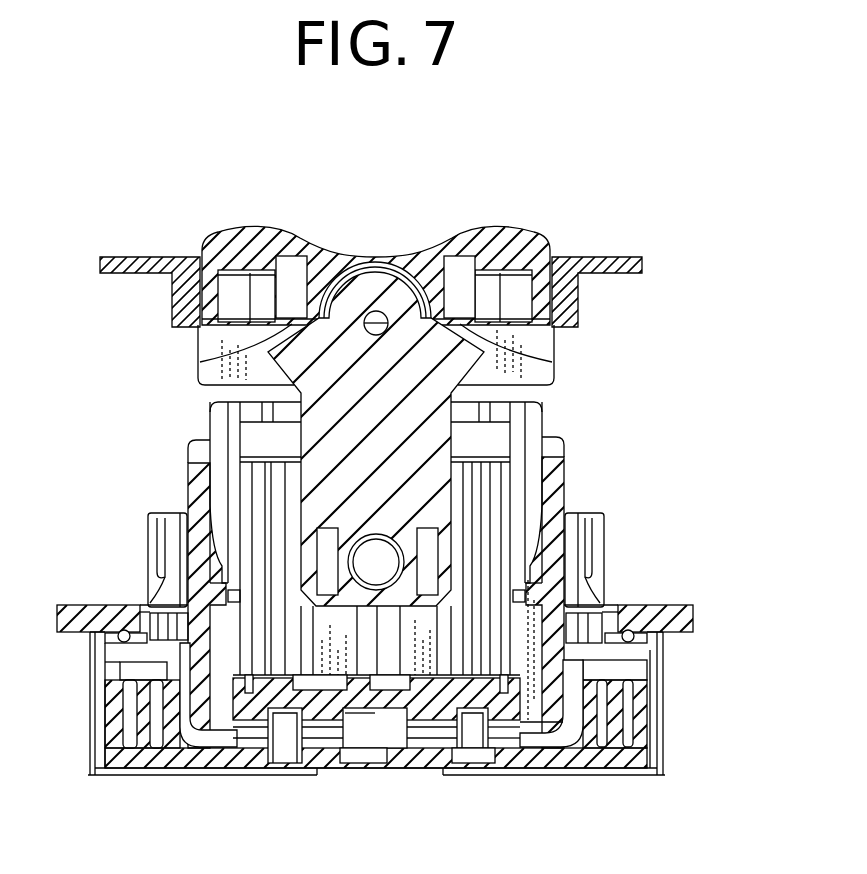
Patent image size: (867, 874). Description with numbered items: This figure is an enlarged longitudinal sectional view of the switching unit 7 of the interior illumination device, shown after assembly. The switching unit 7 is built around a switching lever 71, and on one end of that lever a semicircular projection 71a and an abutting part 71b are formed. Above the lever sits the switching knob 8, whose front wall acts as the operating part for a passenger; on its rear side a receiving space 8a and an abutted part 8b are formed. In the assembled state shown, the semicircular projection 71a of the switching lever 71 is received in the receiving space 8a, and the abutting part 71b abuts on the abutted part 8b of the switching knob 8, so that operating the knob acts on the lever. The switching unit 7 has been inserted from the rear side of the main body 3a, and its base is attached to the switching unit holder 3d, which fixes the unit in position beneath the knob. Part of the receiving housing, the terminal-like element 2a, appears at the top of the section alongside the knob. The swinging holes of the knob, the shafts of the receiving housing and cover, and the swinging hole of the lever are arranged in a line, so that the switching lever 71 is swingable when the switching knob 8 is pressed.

The switching unit 7 is at (177, 442).
The switching knob 8 is at (376, 234).
The receiving space 8a is at (333, 263).
The abutted part 8b is at (293, 277).
The switching lever 71 is at (393, 374).
The semicircular projection 71a is at (370, 287).
The abutting part 71b is at (277, 343).
The terminal plate 2a is at (597, 258).
The main body 3a is at (653, 605).
The switching unit holder 3d is at (663, 707).